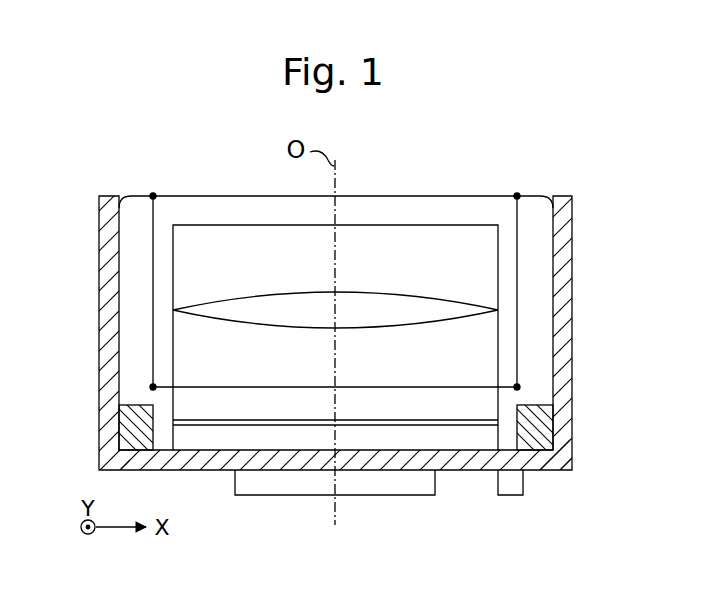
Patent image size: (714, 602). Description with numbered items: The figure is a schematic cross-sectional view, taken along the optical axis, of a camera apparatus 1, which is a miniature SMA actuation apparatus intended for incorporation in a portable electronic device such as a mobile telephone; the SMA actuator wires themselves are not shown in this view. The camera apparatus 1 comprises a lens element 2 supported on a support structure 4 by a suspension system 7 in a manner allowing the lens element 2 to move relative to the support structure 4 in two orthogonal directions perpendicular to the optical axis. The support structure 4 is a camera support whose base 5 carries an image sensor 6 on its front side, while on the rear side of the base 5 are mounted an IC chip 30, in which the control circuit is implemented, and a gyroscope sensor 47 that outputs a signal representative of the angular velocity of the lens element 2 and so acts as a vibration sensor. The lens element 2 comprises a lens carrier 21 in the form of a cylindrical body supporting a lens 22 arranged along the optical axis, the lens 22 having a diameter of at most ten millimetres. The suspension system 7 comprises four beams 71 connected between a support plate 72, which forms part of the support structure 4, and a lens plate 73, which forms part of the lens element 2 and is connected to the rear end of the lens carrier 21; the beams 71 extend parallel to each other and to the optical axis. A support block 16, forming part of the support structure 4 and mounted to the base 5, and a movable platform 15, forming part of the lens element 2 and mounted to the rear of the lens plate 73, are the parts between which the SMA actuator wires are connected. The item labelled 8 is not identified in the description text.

The camera apparatus 1 is at (221, 176).
The lens element 2 is at (450, 242).
The support structure 4 is at (560, 270).
The base 5 is at (538, 460).
The image sensor 6 is at (462, 438).
The suspension system 7 is at (498, 346).
The suspension wire 8 is at (149, 387).
The movable platform 15 is at (495, 393).
The support block 16 is at (540, 440).
The lens carrier 21 is at (500, 285).
The lens 22 is at (392, 300).
The IC chip 30 is at (395, 490).
The gyroscope sensor 47 is at (511, 490).
The beams 71 is at (521, 210).
The support plate 72 is at (525, 194).
The lens plate 73 is at (521, 385).